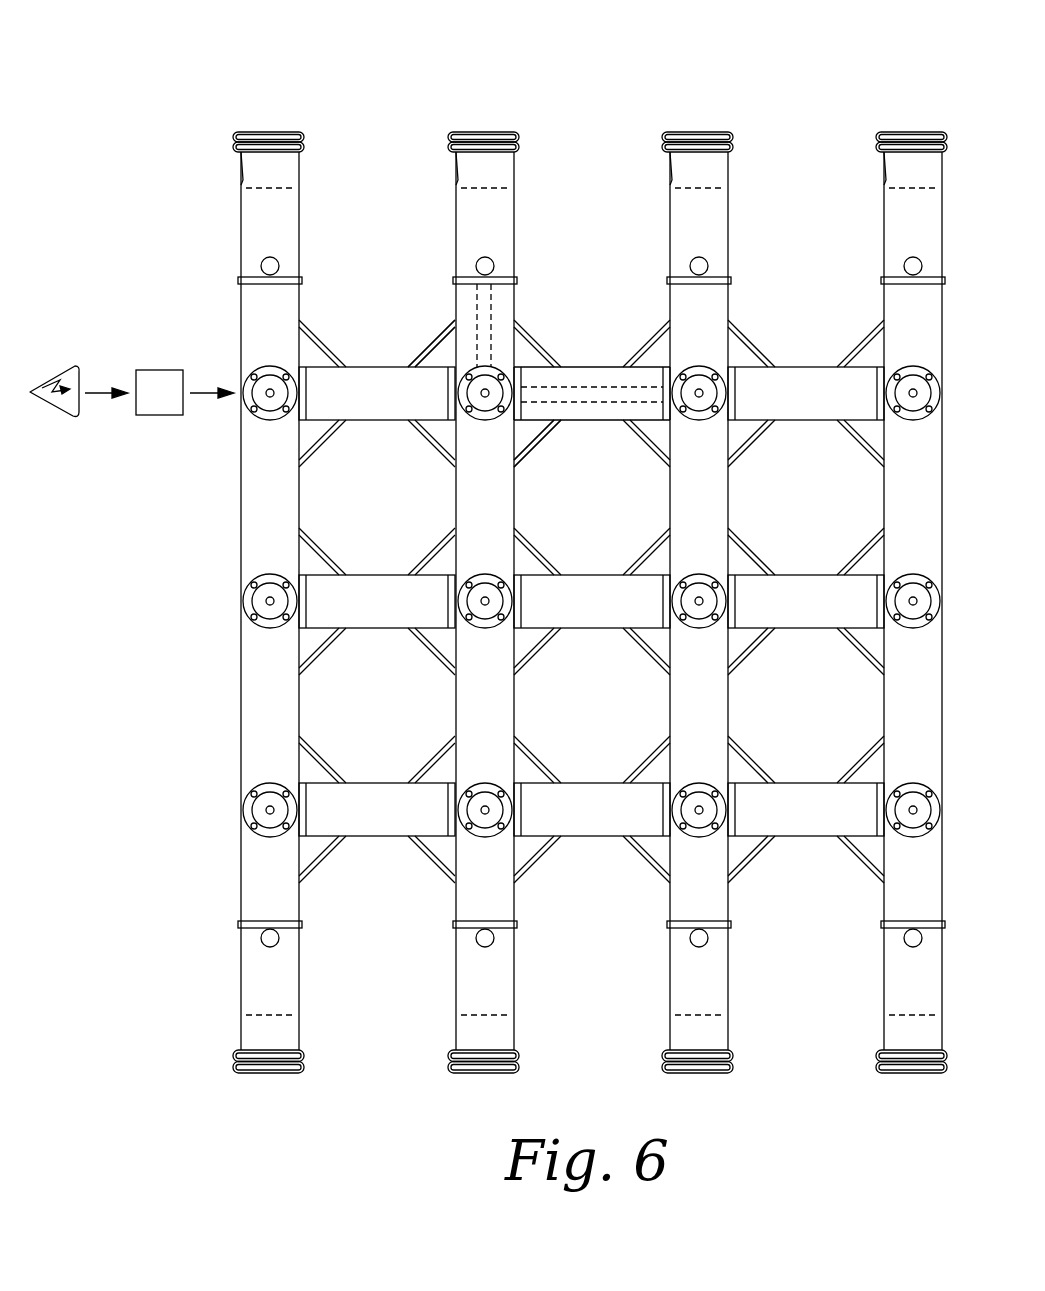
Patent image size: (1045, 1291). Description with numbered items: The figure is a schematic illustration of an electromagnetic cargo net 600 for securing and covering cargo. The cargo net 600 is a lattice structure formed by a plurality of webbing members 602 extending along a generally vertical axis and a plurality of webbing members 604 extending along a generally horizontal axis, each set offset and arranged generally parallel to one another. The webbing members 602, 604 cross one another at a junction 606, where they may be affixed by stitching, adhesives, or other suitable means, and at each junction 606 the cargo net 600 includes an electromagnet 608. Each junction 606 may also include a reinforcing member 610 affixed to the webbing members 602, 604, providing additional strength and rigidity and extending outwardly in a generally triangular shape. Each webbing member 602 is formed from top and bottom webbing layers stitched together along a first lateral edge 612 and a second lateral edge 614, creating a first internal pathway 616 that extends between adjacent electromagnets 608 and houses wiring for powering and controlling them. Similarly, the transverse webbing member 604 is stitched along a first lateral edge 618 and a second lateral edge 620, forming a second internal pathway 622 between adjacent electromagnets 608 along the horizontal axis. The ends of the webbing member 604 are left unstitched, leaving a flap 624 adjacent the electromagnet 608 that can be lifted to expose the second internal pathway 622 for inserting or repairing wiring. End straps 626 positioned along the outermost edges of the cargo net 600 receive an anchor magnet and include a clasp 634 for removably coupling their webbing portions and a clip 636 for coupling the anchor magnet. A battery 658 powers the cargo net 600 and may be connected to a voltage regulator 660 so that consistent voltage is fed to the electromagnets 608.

The electromagnetic cargo net 600 is at (138, 92).
The webbing members 602 is at (505, 298).
The webbing members 604 is at (582, 421).
The junction 606 is at (444, 434).
The electromagnet 608 is at (485, 421).
The reinforcing member 610 is at (527, 447).
The first lateral edge 612 is at (465, 328).
The second lateral edge 614 is at (505, 325).
The first internal pathway 616 is at (478, 318).
The first lateral edge 618 is at (605, 367).
The second lateral edge 620 is at (607, 420).
The second internal pathway 622 is at (583, 386).
The flap 624 is at (523, 421).
The end strap 626 is at (528, 200).
The clasp 634 is at (485, 256).
The clip 636 is at (480, 130).
The battery 658 is at (58, 417).
The voltage regulator 660 is at (158, 416).